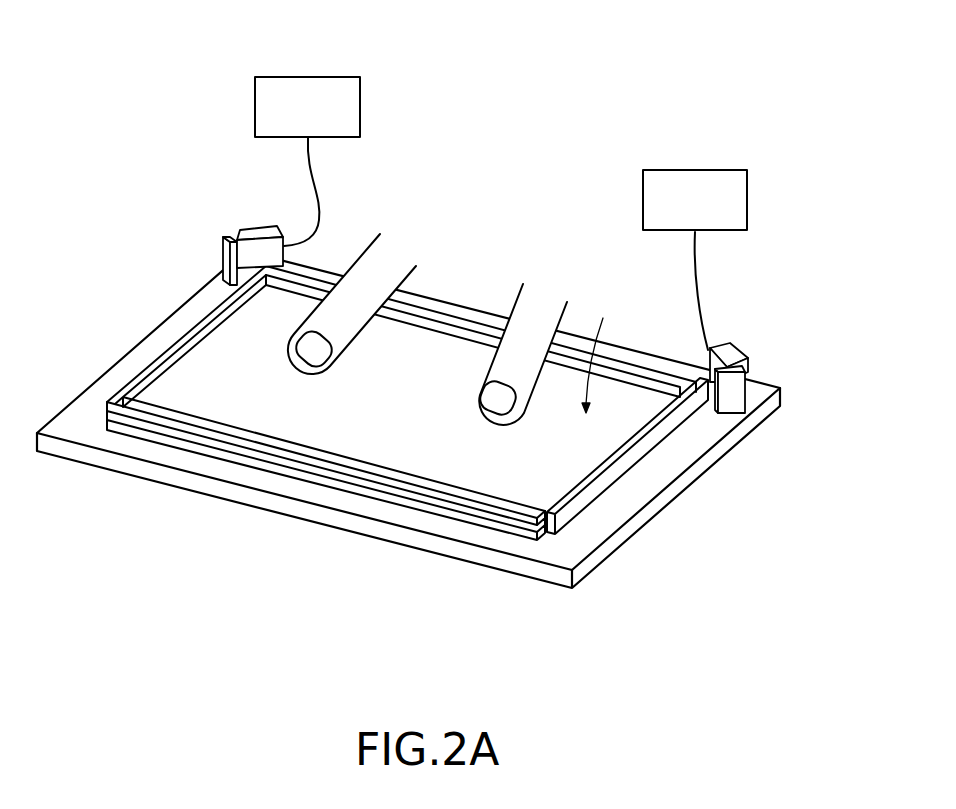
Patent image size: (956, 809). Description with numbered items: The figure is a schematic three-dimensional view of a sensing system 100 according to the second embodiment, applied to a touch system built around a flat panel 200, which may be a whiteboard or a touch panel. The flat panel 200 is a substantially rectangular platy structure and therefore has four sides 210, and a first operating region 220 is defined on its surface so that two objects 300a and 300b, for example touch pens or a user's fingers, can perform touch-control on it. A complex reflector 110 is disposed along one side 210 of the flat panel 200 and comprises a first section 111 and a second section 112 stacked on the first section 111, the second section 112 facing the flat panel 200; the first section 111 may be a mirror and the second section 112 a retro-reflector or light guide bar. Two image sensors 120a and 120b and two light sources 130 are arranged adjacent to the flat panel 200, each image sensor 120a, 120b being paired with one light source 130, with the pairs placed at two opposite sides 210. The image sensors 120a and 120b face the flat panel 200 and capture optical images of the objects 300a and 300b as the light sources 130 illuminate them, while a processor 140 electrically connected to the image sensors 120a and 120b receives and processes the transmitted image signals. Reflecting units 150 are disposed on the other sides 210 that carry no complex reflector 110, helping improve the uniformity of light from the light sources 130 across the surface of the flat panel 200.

The sensing system 100 is at (170, 43).
The complex reflector 110 is at (382, 558).
The first section 111 is at (369, 495).
The second section 112 is at (347, 470).
The image sensor 120a is at (260, 232).
The image sensor 120b is at (730, 352).
The light source 130 is at (224, 252).
The processor 140 is at (326, 117).
The reflecting unit 150 is at (152, 370).
The flat panel 200 is at (763, 389).
The side 210 is at (80, 386).
The first operating region 220 is at (606, 352).
The object 300a is at (527, 302).
The object 300b is at (374, 268).